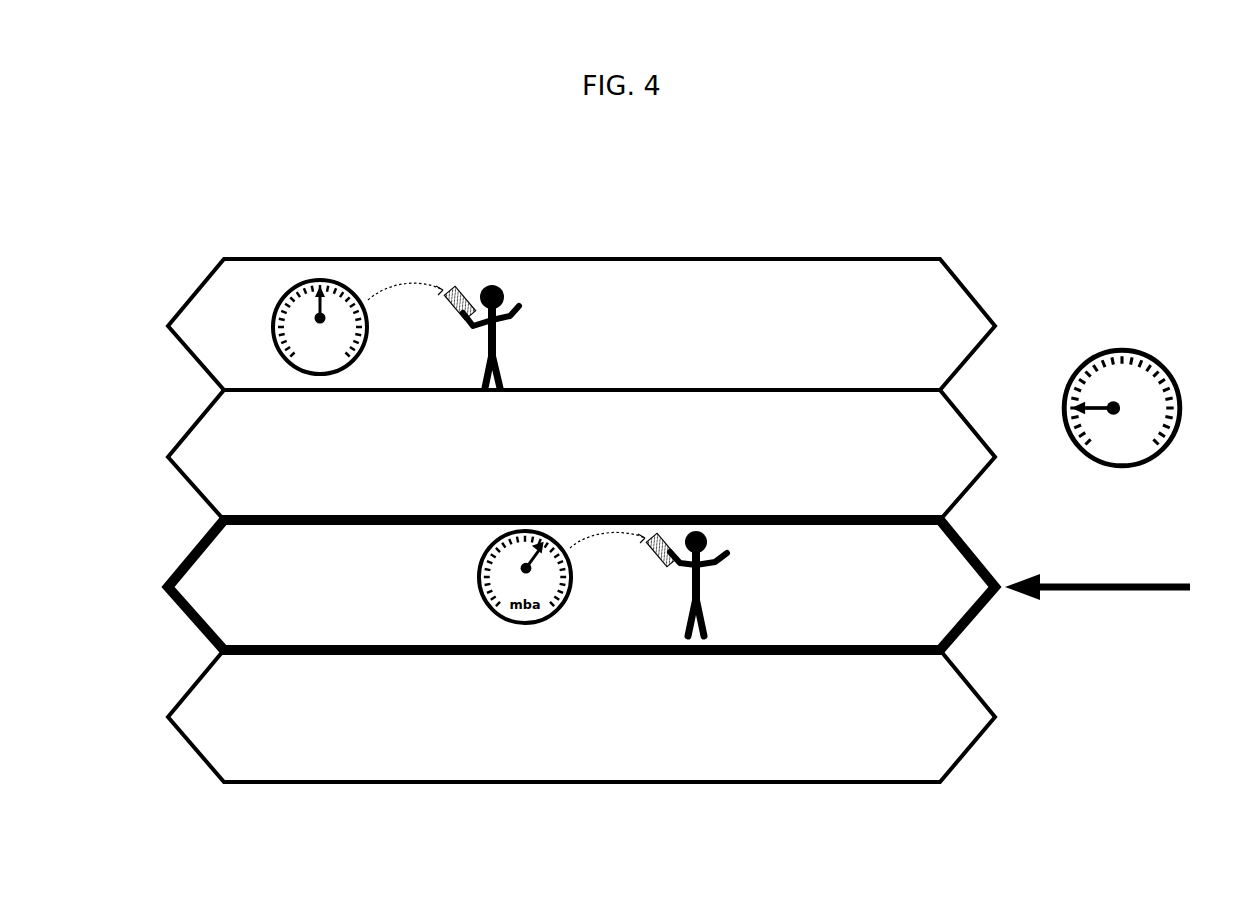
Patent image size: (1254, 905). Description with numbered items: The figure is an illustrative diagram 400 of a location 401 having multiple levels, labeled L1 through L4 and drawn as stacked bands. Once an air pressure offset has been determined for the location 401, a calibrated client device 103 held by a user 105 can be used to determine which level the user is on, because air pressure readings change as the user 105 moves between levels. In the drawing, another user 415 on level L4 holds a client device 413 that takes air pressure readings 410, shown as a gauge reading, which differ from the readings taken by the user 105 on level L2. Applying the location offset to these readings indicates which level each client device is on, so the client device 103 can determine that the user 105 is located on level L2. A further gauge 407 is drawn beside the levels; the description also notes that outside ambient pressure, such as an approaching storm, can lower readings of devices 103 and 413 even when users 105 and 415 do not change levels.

The illustrative diagram 400 is at (1221, 62).
The location 401 is at (890, 252).
The air pressure readings 410 is at (279, 301).
The client device 413 is at (448, 318).
The another user 415 is at (511, 322).
The client device 103 is at (655, 562).
The user 105 is at (722, 570).
The reference pressure gauge 407 is at (1163, 453).